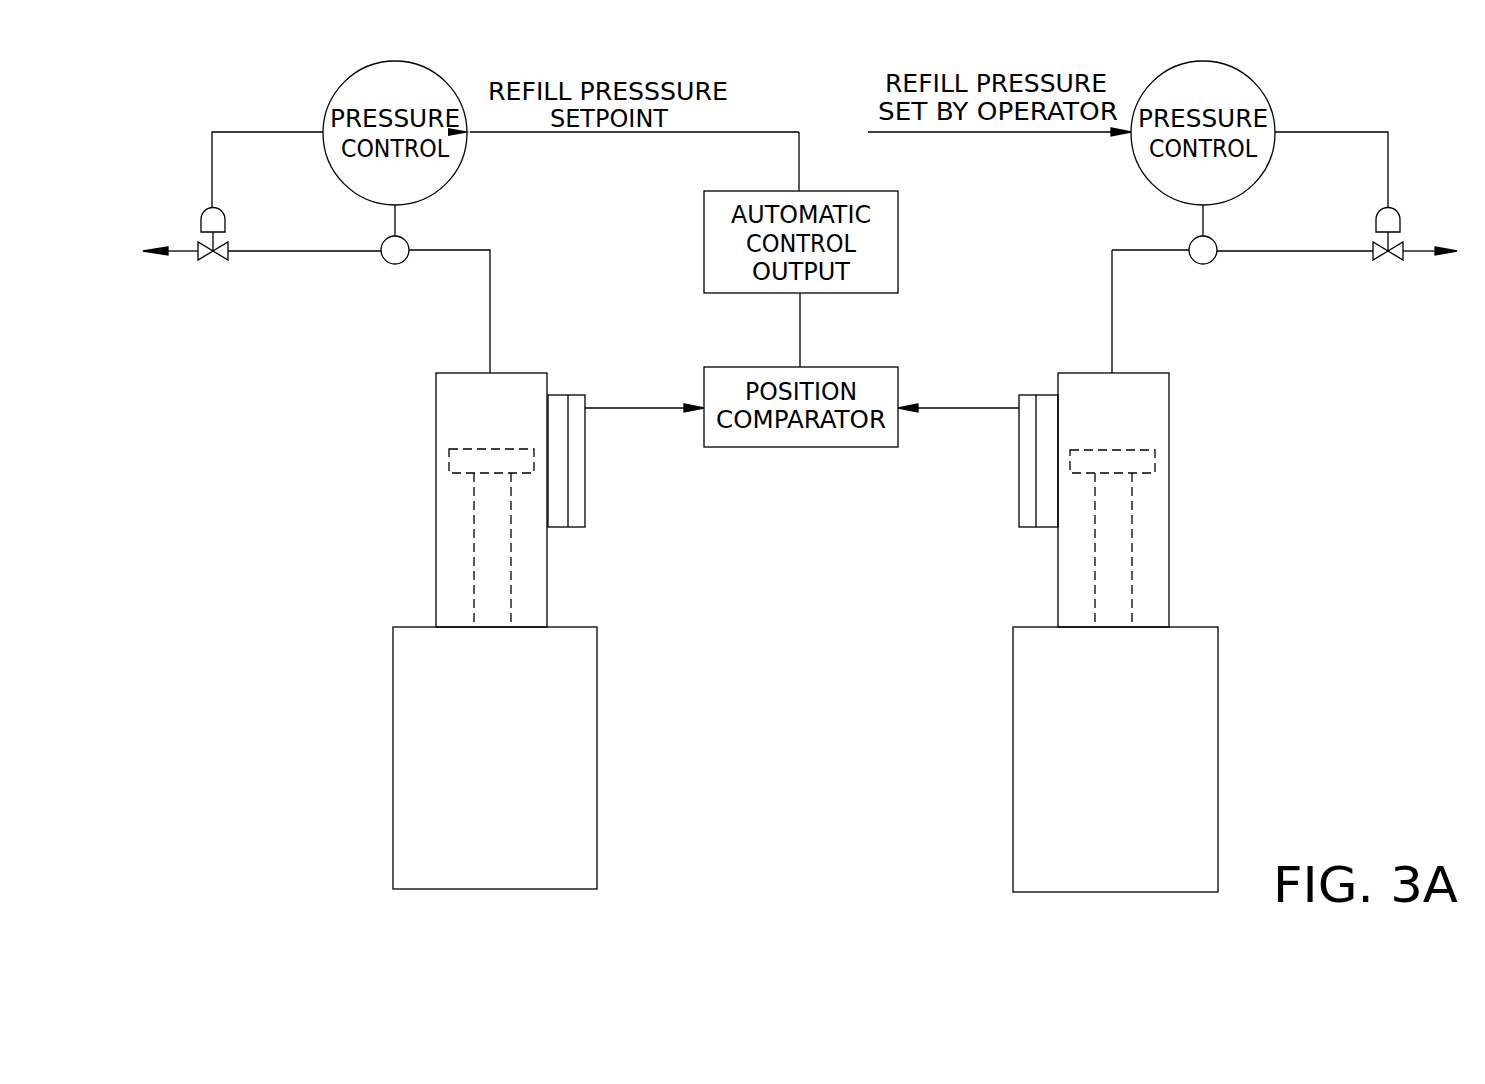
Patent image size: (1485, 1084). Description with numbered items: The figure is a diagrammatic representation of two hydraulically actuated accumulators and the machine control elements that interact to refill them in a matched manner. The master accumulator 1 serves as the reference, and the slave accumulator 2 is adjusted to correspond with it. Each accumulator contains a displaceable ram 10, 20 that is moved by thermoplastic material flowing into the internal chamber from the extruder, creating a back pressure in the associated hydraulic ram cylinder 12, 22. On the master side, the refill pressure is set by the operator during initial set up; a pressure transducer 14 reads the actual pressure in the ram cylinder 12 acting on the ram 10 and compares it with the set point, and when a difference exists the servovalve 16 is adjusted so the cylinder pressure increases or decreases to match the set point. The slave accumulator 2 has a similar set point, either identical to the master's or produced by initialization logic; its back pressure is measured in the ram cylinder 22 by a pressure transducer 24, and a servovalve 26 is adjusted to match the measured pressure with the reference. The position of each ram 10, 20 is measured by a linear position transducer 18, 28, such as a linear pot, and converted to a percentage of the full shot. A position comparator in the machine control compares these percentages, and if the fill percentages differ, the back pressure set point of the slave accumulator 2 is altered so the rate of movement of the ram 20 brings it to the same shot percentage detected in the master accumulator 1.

The master accumulator 1 is at (1108, 787).
The slave accumulator 2 is at (488, 787).
The ram 10 is at (1135, 460).
The ram cylinder 12 is at (1170, 405).
The pressure transducer 14 is at (1213, 260).
The servovalve 16 is at (1380, 210).
The linear position transducer 18 is at (1027, 462).
The ram 20 is at (468, 458).
The ram cylinder 22 is at (436, 403).
The pressure transducer 24 is at (386, 262).
The servovalve 26 is at (227, 211).
The linear position transducer 28 is at (577, 466).